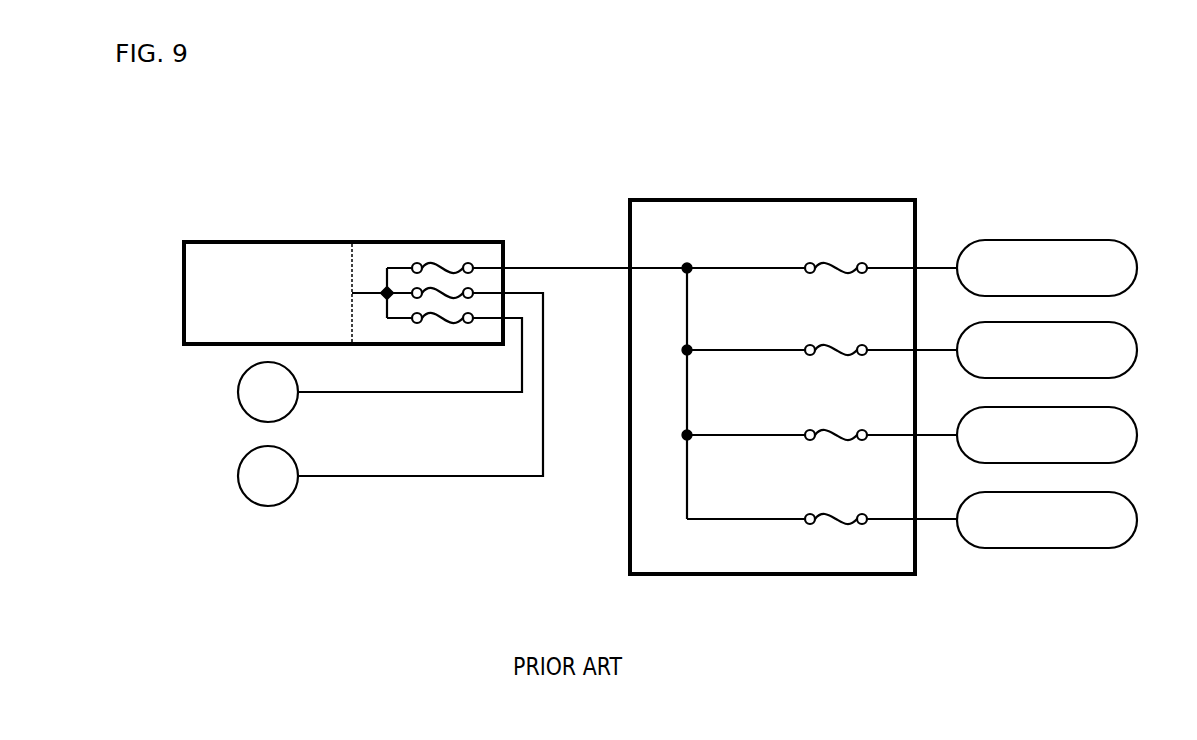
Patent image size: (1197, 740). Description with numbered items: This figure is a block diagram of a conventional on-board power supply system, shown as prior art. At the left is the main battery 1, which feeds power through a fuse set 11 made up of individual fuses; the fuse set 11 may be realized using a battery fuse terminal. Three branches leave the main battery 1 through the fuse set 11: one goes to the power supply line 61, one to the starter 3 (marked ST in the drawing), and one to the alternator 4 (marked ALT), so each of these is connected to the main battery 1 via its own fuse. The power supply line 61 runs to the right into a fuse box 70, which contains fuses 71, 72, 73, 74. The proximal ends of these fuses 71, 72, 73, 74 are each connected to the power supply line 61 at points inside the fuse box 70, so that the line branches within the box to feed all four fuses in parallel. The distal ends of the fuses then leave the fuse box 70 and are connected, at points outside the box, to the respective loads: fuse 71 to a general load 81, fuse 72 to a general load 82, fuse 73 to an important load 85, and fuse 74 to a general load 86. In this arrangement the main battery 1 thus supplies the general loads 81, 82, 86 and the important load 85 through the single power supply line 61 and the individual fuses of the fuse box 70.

The main battery 1 is at (258, 240).
The fuse set 11 is at (425, 240).
The power supply line 61 is at (563, 264).
The starter 3 is at (236, 392).
The alternator 4 is at (236, 476).
The fuse box 70 is at (746, 198).
The fuse 71 is at (838, 262).
The fuse 72 is at (838, 346).
The fuse 73 is at (838, 431).
The fuse 74 is at (838, 515).
The general load 81 is at (1139, 266).
The general load 82 is at (1139, 350).
The important load 85 is at (1139, 435).
The general load 86 is at (1139, 519).